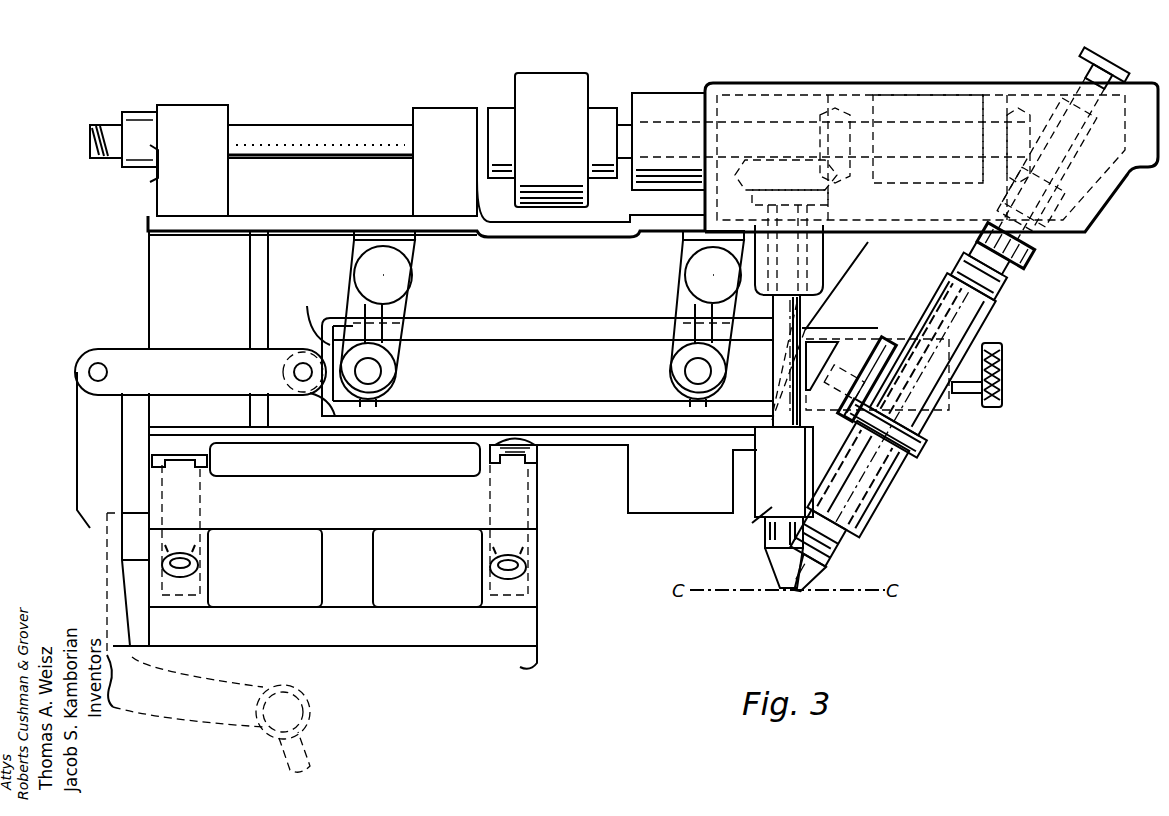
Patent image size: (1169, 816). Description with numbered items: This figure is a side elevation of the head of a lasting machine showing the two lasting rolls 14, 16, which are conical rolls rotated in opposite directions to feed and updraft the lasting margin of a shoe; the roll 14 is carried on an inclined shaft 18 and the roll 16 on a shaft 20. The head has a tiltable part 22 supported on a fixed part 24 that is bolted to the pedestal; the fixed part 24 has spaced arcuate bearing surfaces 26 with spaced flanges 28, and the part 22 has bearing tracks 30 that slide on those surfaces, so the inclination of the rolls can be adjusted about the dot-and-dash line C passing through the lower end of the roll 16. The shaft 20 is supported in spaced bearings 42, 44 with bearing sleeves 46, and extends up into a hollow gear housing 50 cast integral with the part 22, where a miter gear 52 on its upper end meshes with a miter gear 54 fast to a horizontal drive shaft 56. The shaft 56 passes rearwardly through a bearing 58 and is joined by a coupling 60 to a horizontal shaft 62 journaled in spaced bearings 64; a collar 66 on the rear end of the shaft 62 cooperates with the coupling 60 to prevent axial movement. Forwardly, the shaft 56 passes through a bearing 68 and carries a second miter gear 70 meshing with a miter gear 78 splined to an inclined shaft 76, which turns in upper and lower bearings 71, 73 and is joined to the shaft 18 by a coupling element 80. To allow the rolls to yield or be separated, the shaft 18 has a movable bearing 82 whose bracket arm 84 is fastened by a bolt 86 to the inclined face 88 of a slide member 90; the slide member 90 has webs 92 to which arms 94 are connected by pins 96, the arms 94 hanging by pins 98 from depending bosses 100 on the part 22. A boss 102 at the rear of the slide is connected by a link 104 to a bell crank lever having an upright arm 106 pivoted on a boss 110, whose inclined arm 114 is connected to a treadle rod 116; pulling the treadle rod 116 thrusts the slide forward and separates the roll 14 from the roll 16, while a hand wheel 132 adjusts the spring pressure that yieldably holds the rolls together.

The roll 14 is at (812, 582).
The roll 16 is at (780, 563).
The shaft 18 is at (915, 445).
The shaft 20 is at (772, 382).
The part 22 is at (655, 513).
The fixed part 24 is at (465, 646).
The arcuate bearing surfaces 26 is at (215, 468).
The flanges 28 is at (535, 455).
The bearing tracks 30 is at (180, 452).
The bearing 42 is at (822, 253).
The bearing 44 is at (752, 523).
The bearing sleeves 46 is at (838, 280).
The gear housing 50 is at (888, 82).
The miter gear 52 is at (825, 180).
The miter gear 54 is at (825, 100).
The drive shaft 56 is at (622, 122).
The bearing 58 is at (670, 92).
The coupling 60 is at (538, 80).
The horizontal shaft 62 is at (345, 128).
The bearings 64 is at (197, 102).
The collar 66 is at (143, 108).
The bearing 68 is at (928, 108).
The miter gear 70 is at (1012, 110).
The bearing 71 is at (1092, 62).
The bearing 73 is at (1045, 250).
The inclined shaft 76 is at (1008, 272).
The miter gear 78 is at (1085, 212).
The coupling element 80 is at (962, 293).
The movable bearing 82 is at (890, 483).
The bracket arm 84 is at (815, 450).
The bolt 86 is at (890, 330).
The inclined face 88 is at (865, 338).
The slide member 90 is at (555, 326).
The webs 92 is at (380, 402).
The arms 94 is at (400, 306).
The pins 96 is at (395, 380).
The pins 98 is at (395, 278).
The bosses 100 is at (413, 254).
The boss 102 is at (306, 318).
The link 104 is at (190, 348).
The upright arm 106 is at (76, 414).
The boss 110 is at (160, 530).
The inclined arm 114 is at (208, 723).
The treadle rod 116 is at (303, 750).
The hand wheel 132 is at (1004, 372).